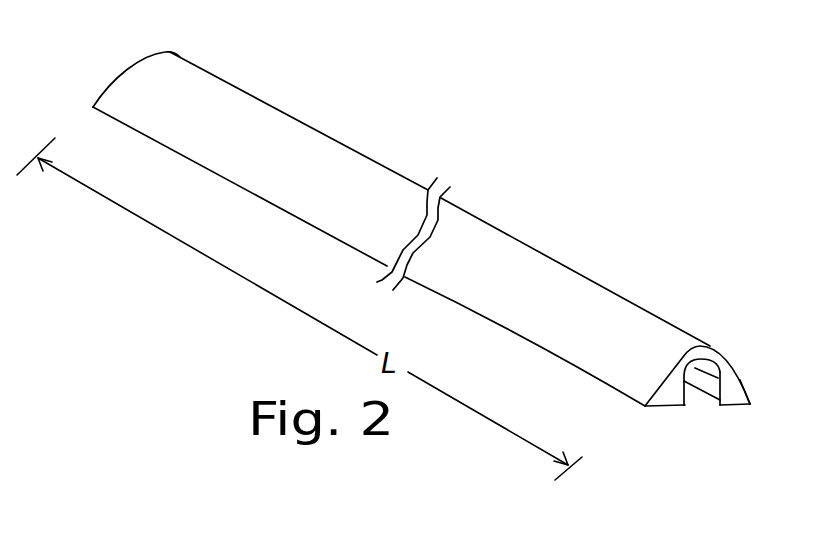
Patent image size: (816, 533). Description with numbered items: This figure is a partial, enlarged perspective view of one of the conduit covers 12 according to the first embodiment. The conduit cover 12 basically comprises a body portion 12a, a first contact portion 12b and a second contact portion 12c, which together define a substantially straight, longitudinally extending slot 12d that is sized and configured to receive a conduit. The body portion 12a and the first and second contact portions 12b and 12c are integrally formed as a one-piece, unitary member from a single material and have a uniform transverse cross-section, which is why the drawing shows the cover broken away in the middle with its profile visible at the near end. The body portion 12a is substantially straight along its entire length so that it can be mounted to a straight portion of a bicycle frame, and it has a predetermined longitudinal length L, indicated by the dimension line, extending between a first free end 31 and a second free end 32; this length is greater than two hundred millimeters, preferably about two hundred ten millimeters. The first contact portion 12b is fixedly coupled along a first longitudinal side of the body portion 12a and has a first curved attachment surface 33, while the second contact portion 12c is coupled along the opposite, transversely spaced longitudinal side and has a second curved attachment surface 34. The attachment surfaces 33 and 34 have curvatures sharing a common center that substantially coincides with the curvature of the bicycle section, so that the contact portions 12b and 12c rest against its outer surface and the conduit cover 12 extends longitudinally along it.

The conduit cover 12 is at (542, 247).
The body portion 12a is at (587, 293).
The first contact portion 12b is at (660, 393).
The second contact portion 12c is at (732, 388).
The longitudinally extending slot 12d is at (700, 405).
The first free end 31 is at (177, 55).
The second free end 32 is at (712, 347).
The first curved attachment surface 33 is at (660, 409).
The second curved attachment surface 34 is at (738, 409).